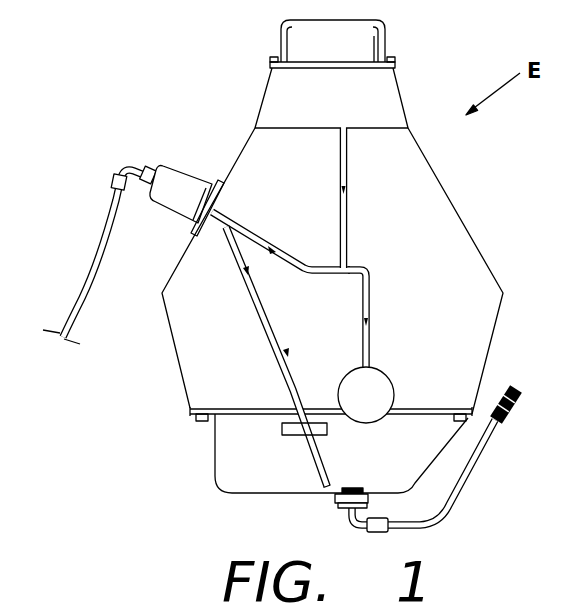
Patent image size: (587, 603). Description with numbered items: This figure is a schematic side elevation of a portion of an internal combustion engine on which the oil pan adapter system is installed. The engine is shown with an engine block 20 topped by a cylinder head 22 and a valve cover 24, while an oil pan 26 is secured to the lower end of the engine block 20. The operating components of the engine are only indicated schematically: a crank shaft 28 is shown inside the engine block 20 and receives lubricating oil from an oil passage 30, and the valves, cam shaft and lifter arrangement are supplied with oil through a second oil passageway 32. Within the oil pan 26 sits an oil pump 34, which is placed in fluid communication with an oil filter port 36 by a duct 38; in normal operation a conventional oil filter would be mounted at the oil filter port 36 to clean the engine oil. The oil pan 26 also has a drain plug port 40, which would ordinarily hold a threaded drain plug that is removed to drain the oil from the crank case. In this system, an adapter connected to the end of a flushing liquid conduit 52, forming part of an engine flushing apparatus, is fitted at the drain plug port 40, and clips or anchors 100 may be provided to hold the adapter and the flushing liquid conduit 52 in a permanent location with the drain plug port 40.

The engine block 20 is at (441, 186).
The cylinder head 22 is at (400, 92).
The valve cover 24 is at (385, 40).
The oil pan 26 is at (215, 467).
The crank shaft 28 is at (391, 382).
The oil passage 30 is at (370, 303).
The second oil passageway 32 is at (348, 223).
The oil pump 34 is at (282, 430).
The oil filter port 36 is at (219, 181).
The duct 38 is at (259, 318).
The drain plug port 40 is at (356, 488).
The flushing liquid conduit 52 is at (480, 455).
The clips or anchors 100 is at (498, 424).